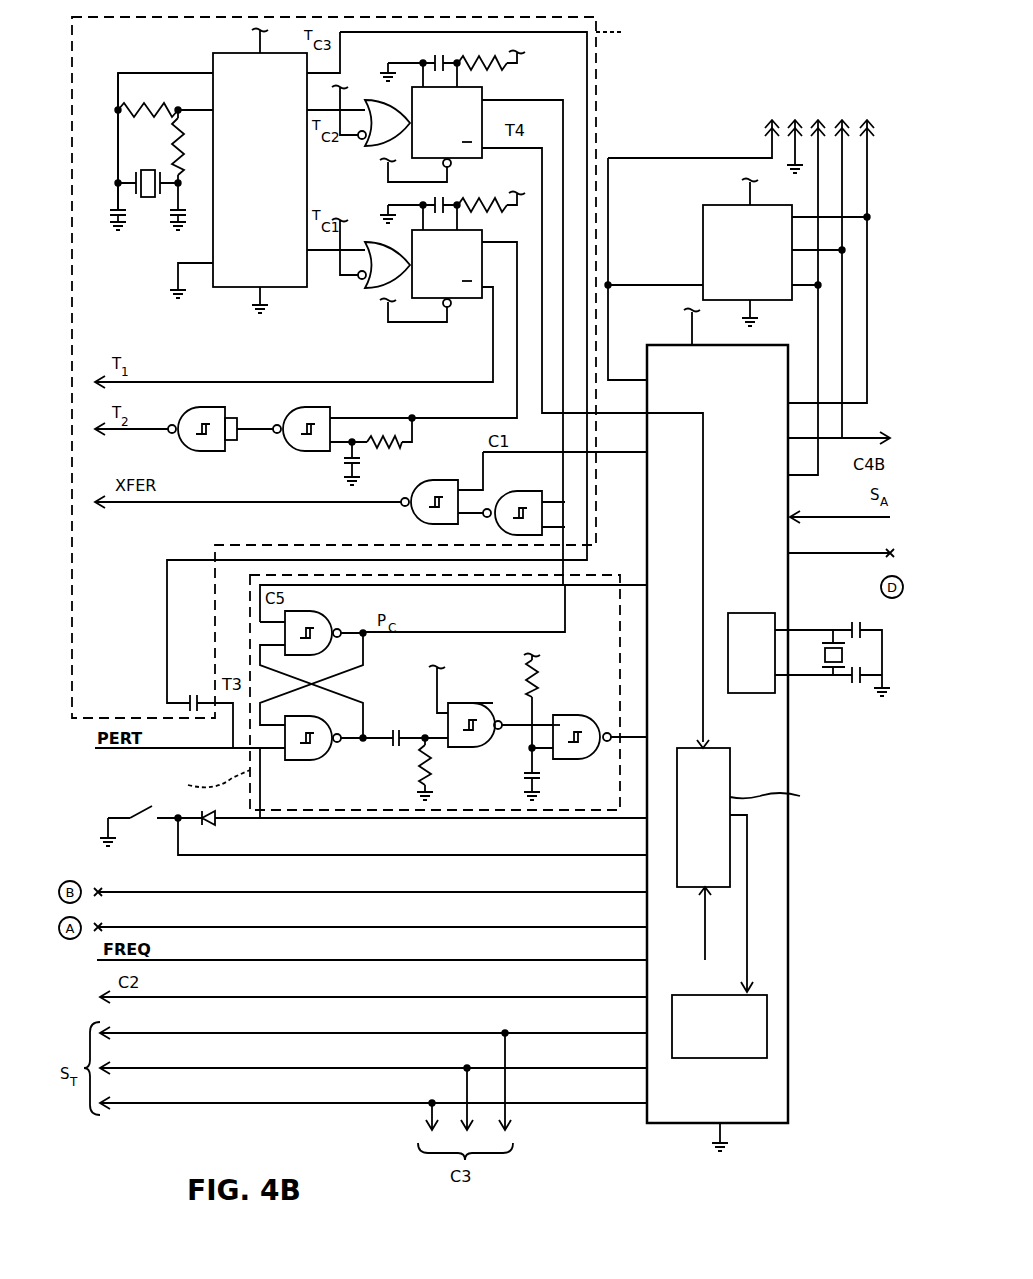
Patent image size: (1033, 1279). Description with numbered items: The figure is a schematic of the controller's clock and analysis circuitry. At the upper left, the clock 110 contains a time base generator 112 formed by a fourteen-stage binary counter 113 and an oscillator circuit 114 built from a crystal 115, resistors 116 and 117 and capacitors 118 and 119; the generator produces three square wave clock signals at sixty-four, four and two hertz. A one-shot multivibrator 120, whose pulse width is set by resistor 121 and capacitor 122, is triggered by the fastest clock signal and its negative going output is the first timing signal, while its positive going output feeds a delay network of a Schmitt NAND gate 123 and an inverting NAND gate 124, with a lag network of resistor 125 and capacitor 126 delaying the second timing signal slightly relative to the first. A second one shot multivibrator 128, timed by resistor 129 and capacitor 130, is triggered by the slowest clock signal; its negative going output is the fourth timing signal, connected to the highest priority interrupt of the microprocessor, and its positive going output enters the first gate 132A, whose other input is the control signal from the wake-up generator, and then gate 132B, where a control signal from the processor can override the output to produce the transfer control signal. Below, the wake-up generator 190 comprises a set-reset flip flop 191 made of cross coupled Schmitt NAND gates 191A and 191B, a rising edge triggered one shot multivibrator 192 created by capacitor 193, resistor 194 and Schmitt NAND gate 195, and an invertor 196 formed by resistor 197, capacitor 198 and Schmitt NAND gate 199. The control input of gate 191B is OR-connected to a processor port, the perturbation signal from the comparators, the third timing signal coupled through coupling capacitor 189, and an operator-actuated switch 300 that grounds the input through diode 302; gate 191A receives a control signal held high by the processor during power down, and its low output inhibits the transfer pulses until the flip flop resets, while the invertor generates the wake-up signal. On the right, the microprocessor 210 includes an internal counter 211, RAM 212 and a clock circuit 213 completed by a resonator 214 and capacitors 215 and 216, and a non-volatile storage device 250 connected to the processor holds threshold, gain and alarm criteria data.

The clock 110 is at (596, 97).
The time base generator 112 is at (157, 263).
The 14-stage binary counter 113 is at (224, 290).
The oscillator circuit 114 is at (106, 160).
The crystal 115 is at (147, 169).
The resistor 116 is at (146, 107).
The resistor 117 is at (182, 147).
The capacitor 118 is at (114, 207).
The capacitor 119 is at (194, 196).
The one-shot multivibrator 120 is at (359, 292).
The resistor 121 is at (493, 175).
The capacitor 122 is at (431, 205).
The Schmitt NAND gate 123 is at (294, 453).
The inverting NAND gate 124 is at (203, 452).
The resistor 125 is at (403, 446).
The capacitor 126 is at (358, 462).
The one shot multivibrator 128 is at (361, 154).
The resistor 129 is at (497, 58).
The capacitor 130 is at (432, 58).
The first gate 132A is at (510, 488).
The gate 132B is at (415, 518).
The coupling capacitor 189 is at (190, 697).
The wake-up generator 190 is at (590, 575).
The set-reset flip flop 191 is at (348, 687).
The Schmitt NAND gate 191A is at (310, 612).
The Schmitt NAND gate 191B is at (317, 761).
The one shot multivibrator 192 is at (467, 694).
The capacitor 193 is at (394, 728).
The resistor 194 is at (430, 768).
The Schmitt NAND gate 195 is at (513, 686).
The invertor 196 is at (576, 700).
The resistor 197 is at (535, 678).
The capacitor 198 is at (537, 783).
The Schmitt NAND gate 199 is at (572, 760).
The microprocessor 210 is at (770, 1123).
The internal counter 211 is at (730, 763).
The RAM 212 is at (725, 1058).
The clock circuit 213 is at (752, 608).
The resonator 214 is at (826, 676).
The capacitor 215 is at (862, 607).
The capacitor 216 is at (853, 683).
The non-volatile storage device 250 is at (702, 237).
The operator-actuated switch 300 is at (148, 825).
The diode 302 is at (217, 823).